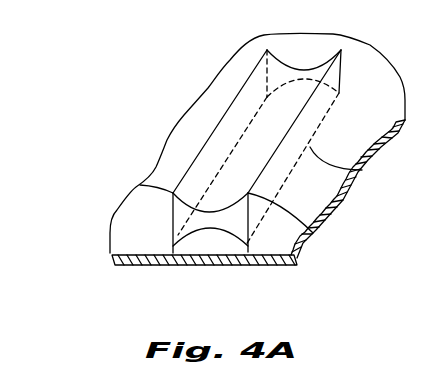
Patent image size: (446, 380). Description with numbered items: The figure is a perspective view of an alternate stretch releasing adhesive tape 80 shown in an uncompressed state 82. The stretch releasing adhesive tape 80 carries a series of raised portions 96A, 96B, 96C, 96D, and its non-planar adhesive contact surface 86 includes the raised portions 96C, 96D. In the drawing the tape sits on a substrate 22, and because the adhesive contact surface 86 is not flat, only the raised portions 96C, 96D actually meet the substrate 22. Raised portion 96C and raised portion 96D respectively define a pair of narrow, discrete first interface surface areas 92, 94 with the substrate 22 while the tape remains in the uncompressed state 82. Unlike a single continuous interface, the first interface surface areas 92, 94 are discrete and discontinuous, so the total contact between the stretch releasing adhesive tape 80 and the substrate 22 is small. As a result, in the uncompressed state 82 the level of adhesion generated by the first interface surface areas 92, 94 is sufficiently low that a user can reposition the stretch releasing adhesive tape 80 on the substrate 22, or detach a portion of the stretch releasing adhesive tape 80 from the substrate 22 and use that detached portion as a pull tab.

The substrate 22 is at (243, 58).
The stretch releasing adhesive tape 80 is at (200, 154).
The uncompressed state 82 is at (342, 64).
The first interface surface area 92 is at (240, 138).
The first interface surface area 94 is at (362, 170).
The non-planar adhesive contact surface 86 is at (213, 230).
The raised portion 96A is at (140, 185).
The raised portion 96B is at (313, 233).
The raised portion 96C is at (172, 254).
The raised portion 96D is at (246, 252).